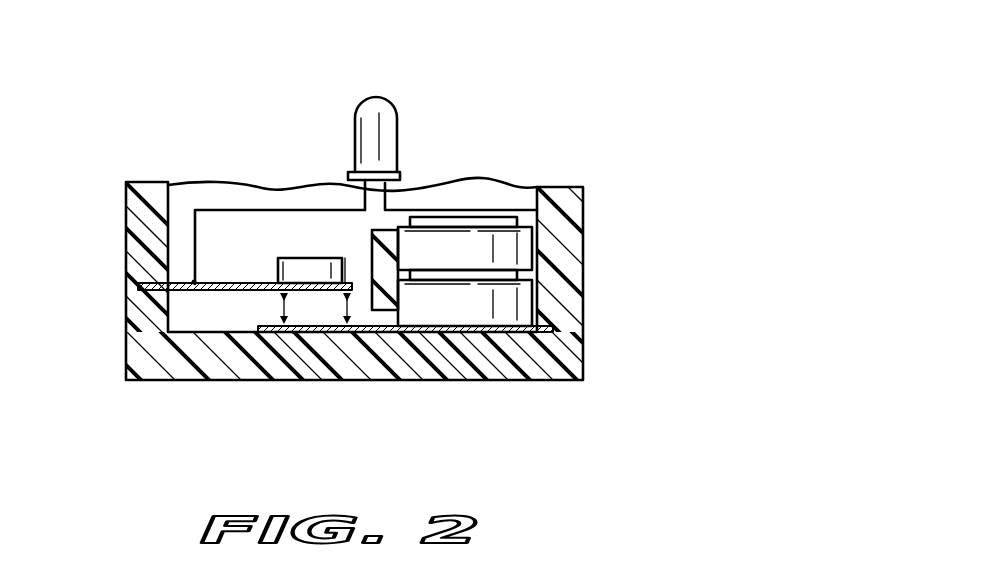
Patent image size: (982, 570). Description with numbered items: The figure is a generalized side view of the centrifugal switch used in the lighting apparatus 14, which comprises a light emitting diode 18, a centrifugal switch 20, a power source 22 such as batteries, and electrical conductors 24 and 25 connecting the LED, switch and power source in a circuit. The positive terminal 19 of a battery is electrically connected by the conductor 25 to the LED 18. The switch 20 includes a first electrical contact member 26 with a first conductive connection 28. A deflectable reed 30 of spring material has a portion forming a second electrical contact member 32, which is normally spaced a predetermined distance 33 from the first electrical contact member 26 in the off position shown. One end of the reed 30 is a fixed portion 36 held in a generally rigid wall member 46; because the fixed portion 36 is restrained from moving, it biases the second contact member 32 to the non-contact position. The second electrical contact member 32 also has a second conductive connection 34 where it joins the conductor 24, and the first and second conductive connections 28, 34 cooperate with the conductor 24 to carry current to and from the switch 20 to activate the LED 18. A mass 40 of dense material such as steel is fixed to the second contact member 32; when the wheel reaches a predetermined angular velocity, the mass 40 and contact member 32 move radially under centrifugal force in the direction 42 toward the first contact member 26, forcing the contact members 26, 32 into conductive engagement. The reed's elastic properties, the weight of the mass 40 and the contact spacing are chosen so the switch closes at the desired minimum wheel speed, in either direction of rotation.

The lighting apparatus 14 is at (534, 94).
The light emitting diode 18 is at (384, 93).
The positive terminal 19 is at (500, 217).
The centrifugal switch 20 is at (367, 413).
The power source 22 is at (527, 300).
The electrical conductor 24 is at (223, 210).
The electrical conductor 25 is at (405, 210).
The first electrical contact member 26 is at (287, 318).
The first conductive connection 28 is at (455, 334).
The deflectable reed 30 is at (223, 283).
The second electrical contact member 32 is at (328, 294).
The predetermined distance 33 is at (277, 312).
The second conductive connection 34 is at (180, 330).
The fixed portion 36 is at (178, 302).
The mass 40 is at (307, 258).
The direction 42 is at (350, 300).
The rigid wall member 46 is at (585, 200).